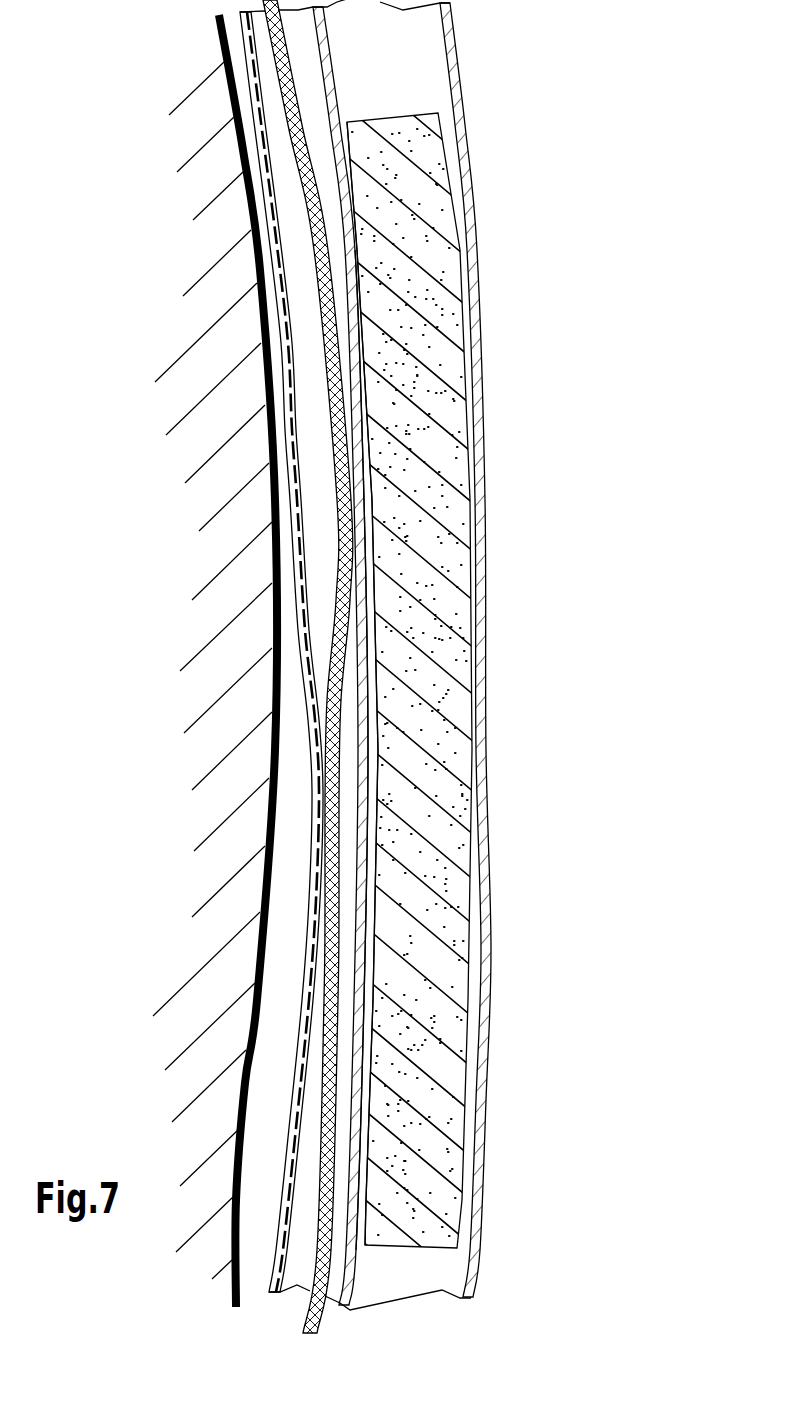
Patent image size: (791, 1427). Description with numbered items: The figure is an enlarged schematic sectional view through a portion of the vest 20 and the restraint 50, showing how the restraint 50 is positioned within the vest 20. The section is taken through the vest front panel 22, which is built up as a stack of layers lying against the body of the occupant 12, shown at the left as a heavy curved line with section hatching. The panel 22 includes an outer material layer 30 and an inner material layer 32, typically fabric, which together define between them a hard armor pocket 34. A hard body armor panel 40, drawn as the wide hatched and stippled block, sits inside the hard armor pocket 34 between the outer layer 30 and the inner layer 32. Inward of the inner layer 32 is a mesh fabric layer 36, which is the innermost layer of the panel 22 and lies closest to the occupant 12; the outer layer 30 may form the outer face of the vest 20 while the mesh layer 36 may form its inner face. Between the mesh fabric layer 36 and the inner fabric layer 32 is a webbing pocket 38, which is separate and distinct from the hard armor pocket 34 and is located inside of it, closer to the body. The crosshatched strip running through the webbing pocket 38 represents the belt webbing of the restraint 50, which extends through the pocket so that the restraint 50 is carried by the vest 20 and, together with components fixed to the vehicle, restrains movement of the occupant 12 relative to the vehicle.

The occupant 12 is at (262, 270).
The vest 20 is at (507, 1208).
The vest front panel 22 is at (524, 1155).
The outer material layer 30 is at (495, 998).
The inner material layer 32 is at (365, 935).
The hard armor pocket 34 is at (370, 893).
The mesh fabric layer 36 is at (290, 360).
The webbing pocket 38 is at (348, 780).
The hard body armor panel 40 is at (425, 500).
The restraint 50 is at (345, 672).